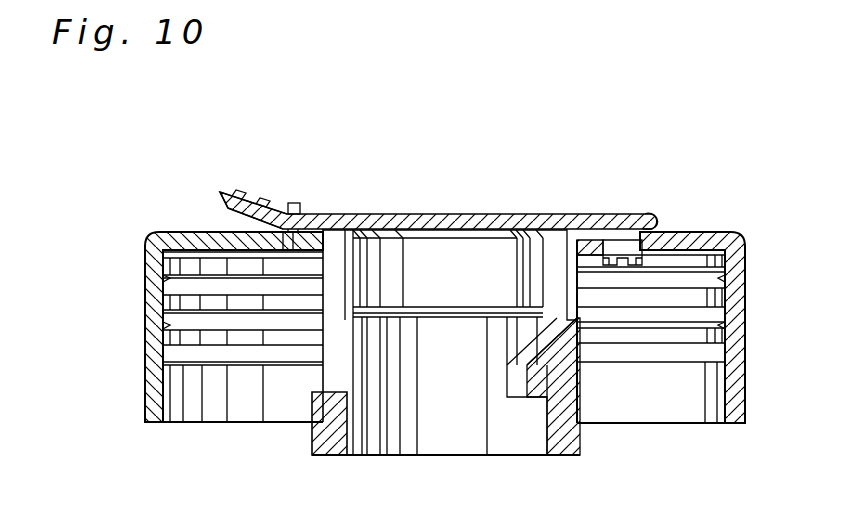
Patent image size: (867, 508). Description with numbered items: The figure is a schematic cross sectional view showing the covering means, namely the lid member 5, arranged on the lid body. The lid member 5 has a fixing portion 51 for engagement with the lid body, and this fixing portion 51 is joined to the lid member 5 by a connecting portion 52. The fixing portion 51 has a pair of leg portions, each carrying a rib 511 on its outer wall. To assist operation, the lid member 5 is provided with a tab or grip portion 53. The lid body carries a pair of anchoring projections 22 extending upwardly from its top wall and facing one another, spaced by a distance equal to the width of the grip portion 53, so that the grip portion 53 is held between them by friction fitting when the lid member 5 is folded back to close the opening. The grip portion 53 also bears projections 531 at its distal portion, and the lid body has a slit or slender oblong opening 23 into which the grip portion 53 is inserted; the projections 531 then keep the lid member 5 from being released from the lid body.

The lid member 5 is at (416, 161).
The anchoring projections 22 is at (294, 203).
The slit or slender oblong opening 23 is at (288, 250).
The fixing portion 51 is at (698, 359).
The rib 511 is at (600, 262).
The connecting portion 52 is at (657, 227).
The tab or grip portion 53 is at (207, 161).
The projections 531 is at (243, 190).